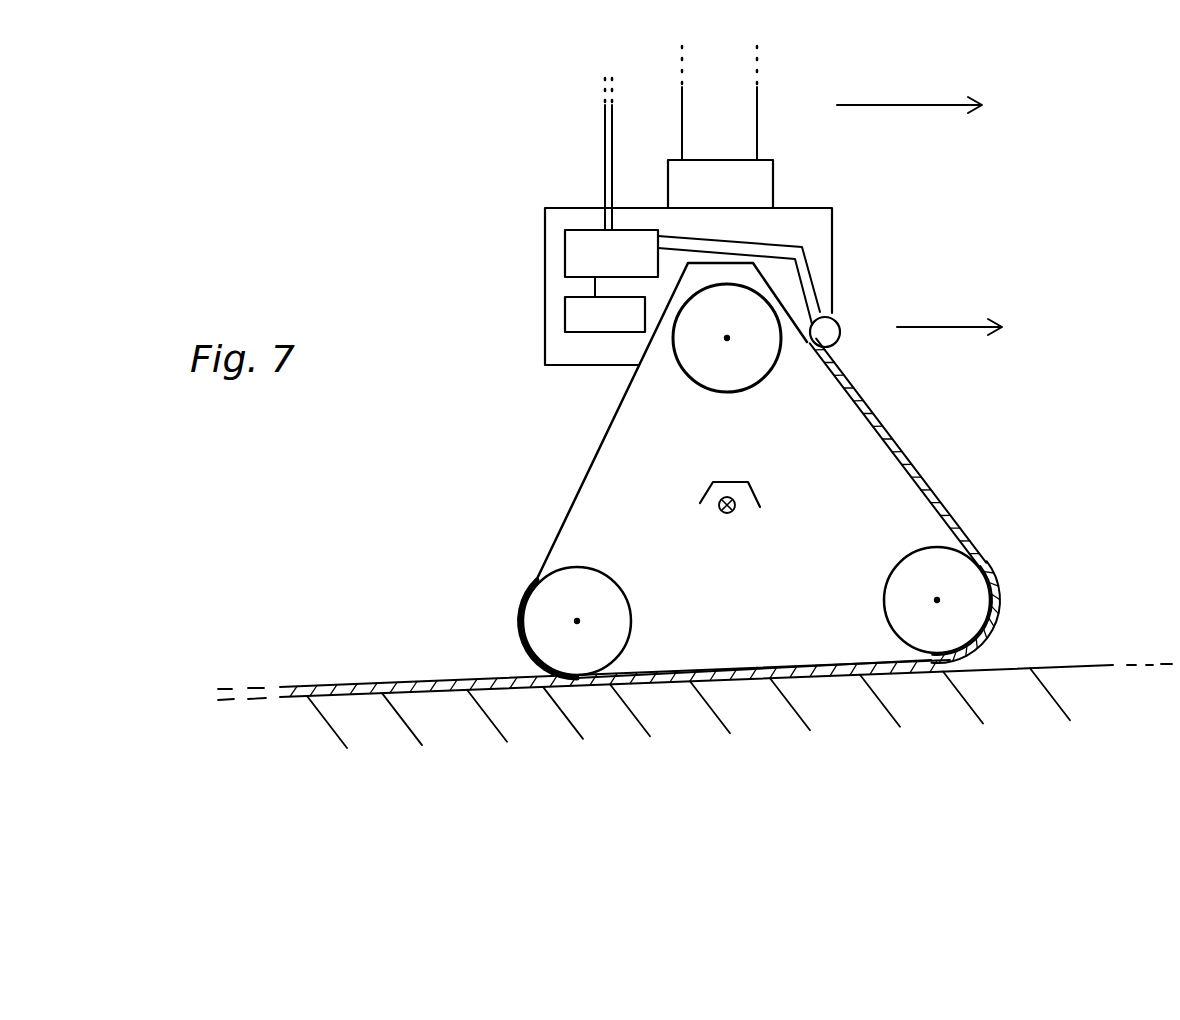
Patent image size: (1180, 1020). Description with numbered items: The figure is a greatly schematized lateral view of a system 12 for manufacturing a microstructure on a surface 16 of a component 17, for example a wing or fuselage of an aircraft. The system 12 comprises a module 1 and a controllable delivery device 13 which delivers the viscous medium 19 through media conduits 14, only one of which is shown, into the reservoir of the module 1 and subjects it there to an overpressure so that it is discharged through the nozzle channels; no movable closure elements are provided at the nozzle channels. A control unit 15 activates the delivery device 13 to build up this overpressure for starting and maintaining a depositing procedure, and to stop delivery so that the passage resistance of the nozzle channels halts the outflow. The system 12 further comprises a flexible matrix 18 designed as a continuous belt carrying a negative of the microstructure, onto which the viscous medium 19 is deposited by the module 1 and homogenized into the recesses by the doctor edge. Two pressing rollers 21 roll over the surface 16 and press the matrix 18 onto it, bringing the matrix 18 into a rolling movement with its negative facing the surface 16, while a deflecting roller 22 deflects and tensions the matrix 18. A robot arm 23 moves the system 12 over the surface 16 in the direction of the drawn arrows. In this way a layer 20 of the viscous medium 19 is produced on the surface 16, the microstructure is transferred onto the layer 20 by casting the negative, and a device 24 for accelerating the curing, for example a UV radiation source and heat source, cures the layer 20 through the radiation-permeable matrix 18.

The module 1 is at (842, 342).
The system 12 is at (446, 161).
The delivery device 13 is at (628, 270).
The media conduit 14 is at (603, 155).
The control unit 15 is at (620, 330).
The surface 16 is at (1077, 668).
The component 17 is at (1036, 725).
The flexible matrix 18 is at (592, 474).
The viscous medium 19 is at (950, 517).
The layer 20 is at (410, 680).
The pressing roller 21 is at (638, 622).
The deflecting roller 22 is at (735, 393).
The robot arm 23 is at (757, 100).
The device for accelerating the curing 24 is at (708, 490).